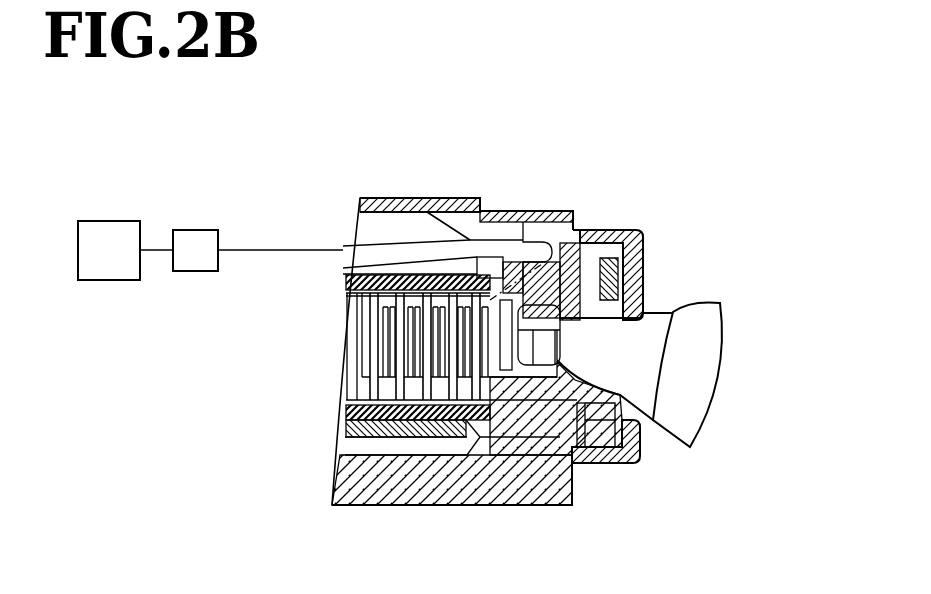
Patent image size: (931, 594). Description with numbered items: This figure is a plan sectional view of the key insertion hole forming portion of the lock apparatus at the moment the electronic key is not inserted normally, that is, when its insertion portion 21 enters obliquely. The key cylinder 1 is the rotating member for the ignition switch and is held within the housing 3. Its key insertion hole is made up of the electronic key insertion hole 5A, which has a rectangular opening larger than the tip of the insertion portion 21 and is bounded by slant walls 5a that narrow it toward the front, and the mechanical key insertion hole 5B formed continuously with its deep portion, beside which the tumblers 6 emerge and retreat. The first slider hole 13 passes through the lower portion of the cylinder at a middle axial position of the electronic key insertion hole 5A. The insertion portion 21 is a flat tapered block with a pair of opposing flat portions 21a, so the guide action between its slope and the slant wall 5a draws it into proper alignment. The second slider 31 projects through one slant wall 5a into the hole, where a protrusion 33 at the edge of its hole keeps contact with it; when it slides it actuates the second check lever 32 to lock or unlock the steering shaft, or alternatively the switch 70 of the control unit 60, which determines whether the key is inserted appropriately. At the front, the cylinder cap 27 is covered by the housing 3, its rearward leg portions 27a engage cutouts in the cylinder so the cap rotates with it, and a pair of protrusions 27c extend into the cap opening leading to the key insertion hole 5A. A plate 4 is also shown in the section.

The key cylinder 1 is at (345, 352).
The housing 3 is at (570, 212).
The plate 4 is at (352, 275).
The electronic key insertion hole 5A is at (500, 400).
The mechanical key insertion hole 5B is at (448, 385).
The slant wall 5a is at (560, 462).
The tumbler 6 is at (393, 425).
The first slider hole 13 is at (487, 353).
The insertion portion 21 is at (698, 387).
The flat portion 21a is at (690, 347).
The cylinder cap 27 is at (643, 235).
The leg portion 27a is at (600, 233).
The protrusion 27c is at (645, 282).
The second slider 31 is at (543, 287).
The second check lever 32 is at (407, 248).
The protrusion 33 is at (600, 300).
The control unit 60 is at (110, 221).
The switch 70 is at (196, 230).